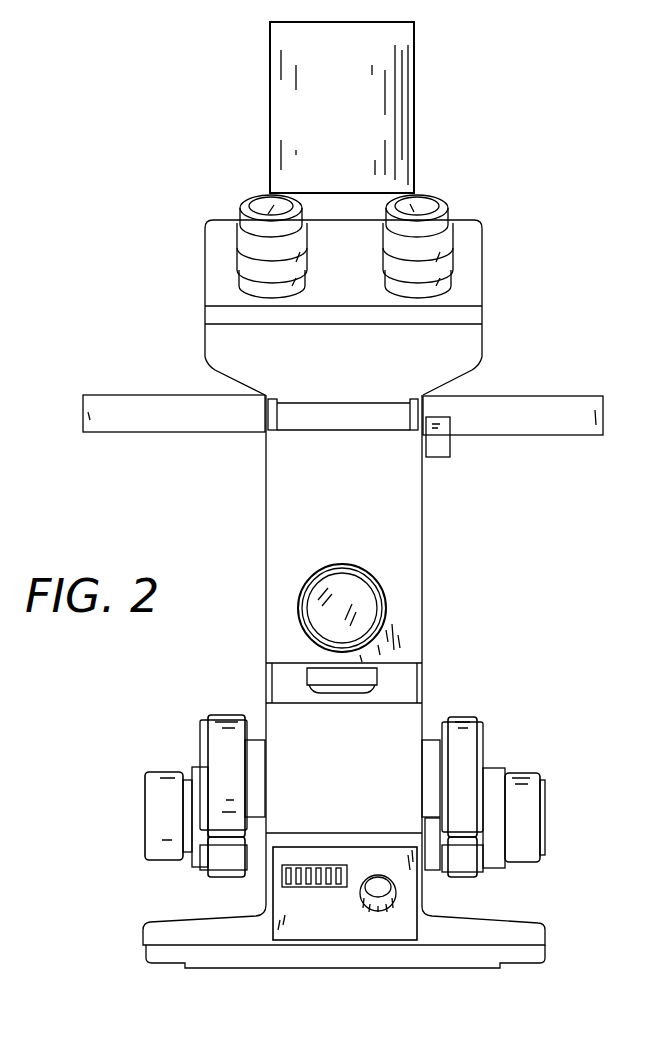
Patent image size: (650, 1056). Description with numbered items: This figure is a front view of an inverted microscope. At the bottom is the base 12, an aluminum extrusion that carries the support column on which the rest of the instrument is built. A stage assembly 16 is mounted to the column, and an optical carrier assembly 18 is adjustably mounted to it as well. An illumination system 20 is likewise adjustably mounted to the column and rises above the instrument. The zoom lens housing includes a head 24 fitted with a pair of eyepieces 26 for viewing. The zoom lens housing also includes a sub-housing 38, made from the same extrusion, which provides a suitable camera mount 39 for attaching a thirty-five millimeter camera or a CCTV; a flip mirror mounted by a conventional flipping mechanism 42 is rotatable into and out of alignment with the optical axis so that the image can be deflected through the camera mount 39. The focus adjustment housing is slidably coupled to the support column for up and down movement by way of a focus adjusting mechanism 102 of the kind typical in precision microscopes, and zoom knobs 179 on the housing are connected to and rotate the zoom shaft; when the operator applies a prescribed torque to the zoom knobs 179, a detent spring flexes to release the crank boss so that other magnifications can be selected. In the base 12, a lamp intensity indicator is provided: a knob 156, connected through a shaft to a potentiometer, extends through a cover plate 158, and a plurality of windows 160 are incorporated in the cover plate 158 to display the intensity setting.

The base 12 is at (508, 936).
The stage assembly 16 is at (521, 386).
The optical carrier assembly 18 is at (436, 710).
The illumination system 20 is at (432, 72).
The head 24 is at (486, 292).
The eyepieces 26 is at (252, 200).
The sub-housing 38 is at (428, 500).
The camera mount 39 is at (362, 574).
The flipping mechanism 42 is at (451, 448).
The focus adjusting mechanism 102 is at (143, 826).
The knob 156 is at (378, 876).
The cover plate 158 is at (312, 932).
The windows 160 is at (320, 862).
The zoom knobs 179 is at (222, 715).